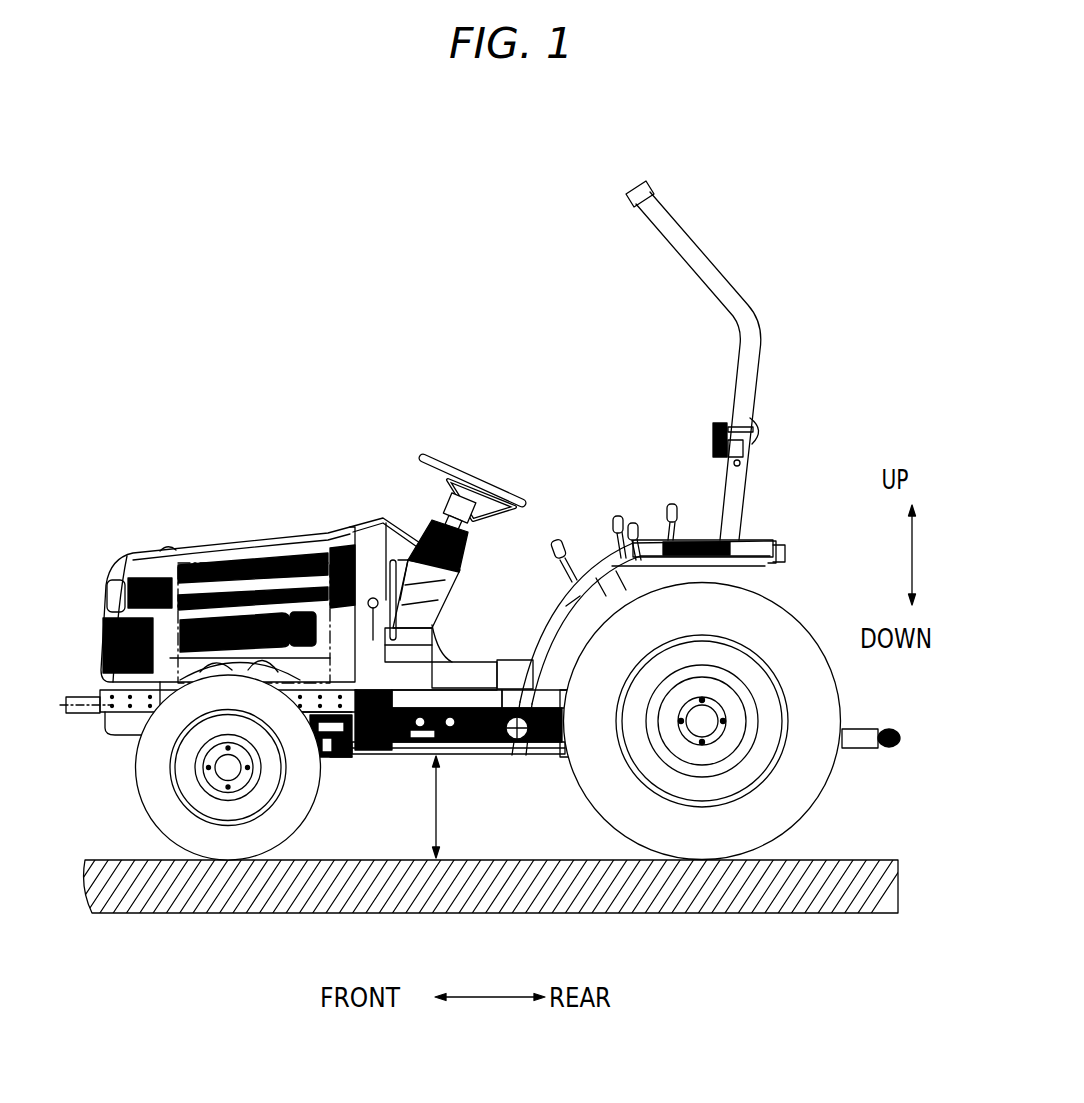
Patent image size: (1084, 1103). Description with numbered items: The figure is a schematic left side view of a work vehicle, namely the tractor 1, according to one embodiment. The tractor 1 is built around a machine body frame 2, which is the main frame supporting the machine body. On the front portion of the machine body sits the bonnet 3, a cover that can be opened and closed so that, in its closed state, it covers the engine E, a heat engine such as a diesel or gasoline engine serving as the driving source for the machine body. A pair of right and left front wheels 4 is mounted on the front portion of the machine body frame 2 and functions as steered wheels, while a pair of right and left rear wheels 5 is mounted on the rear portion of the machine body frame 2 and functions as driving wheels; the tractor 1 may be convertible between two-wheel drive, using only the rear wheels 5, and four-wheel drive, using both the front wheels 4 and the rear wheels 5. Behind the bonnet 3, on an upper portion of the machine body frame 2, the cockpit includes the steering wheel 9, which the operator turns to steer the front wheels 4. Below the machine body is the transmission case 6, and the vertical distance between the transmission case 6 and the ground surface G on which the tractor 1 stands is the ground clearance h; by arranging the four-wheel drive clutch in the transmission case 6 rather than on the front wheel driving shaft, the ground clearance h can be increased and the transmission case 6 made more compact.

The tractor 1 is at (480, 478).
The machine body frame 2 is at (484, 650).
The bonnet 3 is at (233, 540).
The engine E is at (284, 562).
The front wheels 4 is at (147, 812).
The rear wheels 5 is at (818, 797).
The transmission case 6 is at (392, 764).
The steering wheel 9 is at (474, 481).
The ground clearance h is at (444, 807).
The ground surface G is at (512, 859).